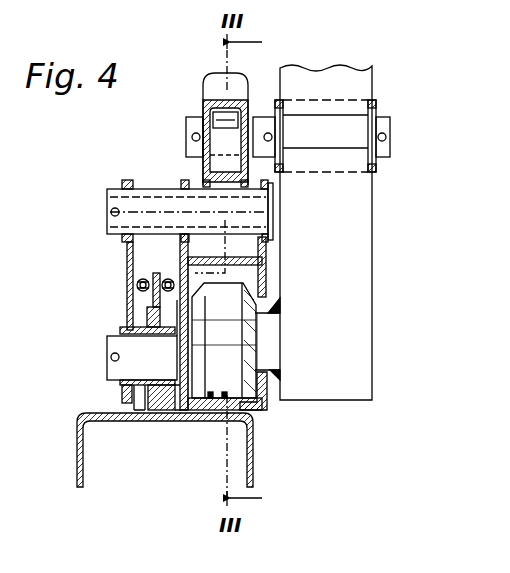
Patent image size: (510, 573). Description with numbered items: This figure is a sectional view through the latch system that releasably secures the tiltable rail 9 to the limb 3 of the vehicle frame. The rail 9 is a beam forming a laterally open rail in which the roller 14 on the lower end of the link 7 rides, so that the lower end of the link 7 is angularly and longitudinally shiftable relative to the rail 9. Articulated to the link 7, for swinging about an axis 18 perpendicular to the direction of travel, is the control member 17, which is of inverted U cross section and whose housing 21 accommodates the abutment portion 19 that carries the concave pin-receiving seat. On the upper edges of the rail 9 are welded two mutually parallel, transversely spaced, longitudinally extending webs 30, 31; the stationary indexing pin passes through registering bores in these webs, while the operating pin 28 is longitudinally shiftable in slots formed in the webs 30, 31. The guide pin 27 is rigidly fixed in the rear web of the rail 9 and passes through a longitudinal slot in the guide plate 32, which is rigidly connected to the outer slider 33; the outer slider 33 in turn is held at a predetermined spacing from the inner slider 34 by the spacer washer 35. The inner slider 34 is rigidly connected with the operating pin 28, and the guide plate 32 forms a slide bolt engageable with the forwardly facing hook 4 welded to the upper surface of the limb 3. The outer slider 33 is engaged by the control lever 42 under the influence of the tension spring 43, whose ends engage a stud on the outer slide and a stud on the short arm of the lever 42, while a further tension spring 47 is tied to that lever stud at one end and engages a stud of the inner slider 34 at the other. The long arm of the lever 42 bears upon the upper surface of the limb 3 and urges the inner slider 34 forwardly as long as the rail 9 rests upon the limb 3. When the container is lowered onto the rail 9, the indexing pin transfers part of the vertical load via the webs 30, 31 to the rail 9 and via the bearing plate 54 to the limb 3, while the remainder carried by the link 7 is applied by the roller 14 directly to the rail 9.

The limb 3 is at (77, 457).
The hook 4 is at (163, 295).
The link 7 is at (337, 295).
The rail 9 is at (267, 407).
The roller 14 is at (237, 375).
The control member 17 is at (200, 111).
The axis 18 is at (395, 152).
The abutment portion 19 is at (212, 175).
The housing 21 is at (210, 88).
The guide pin 27 is at (120, 370).
The operating pin 28 is at (108, 197).
The web 30 is at (272, 250).
The web 31 is at (183, 182).
The guide plate 32 is at (165, 407).
The outer slider 33 is at (123, 343).
The inner slider 34 is at (127, 395).
The spacer washer 35 is at (140, 418).
The control lever 42 is at (150, 295).
The tension spring 43 is at (173, 290).
The tension spring 47 is at (133, 293).
The bearing plate 54 is at (210, 417).